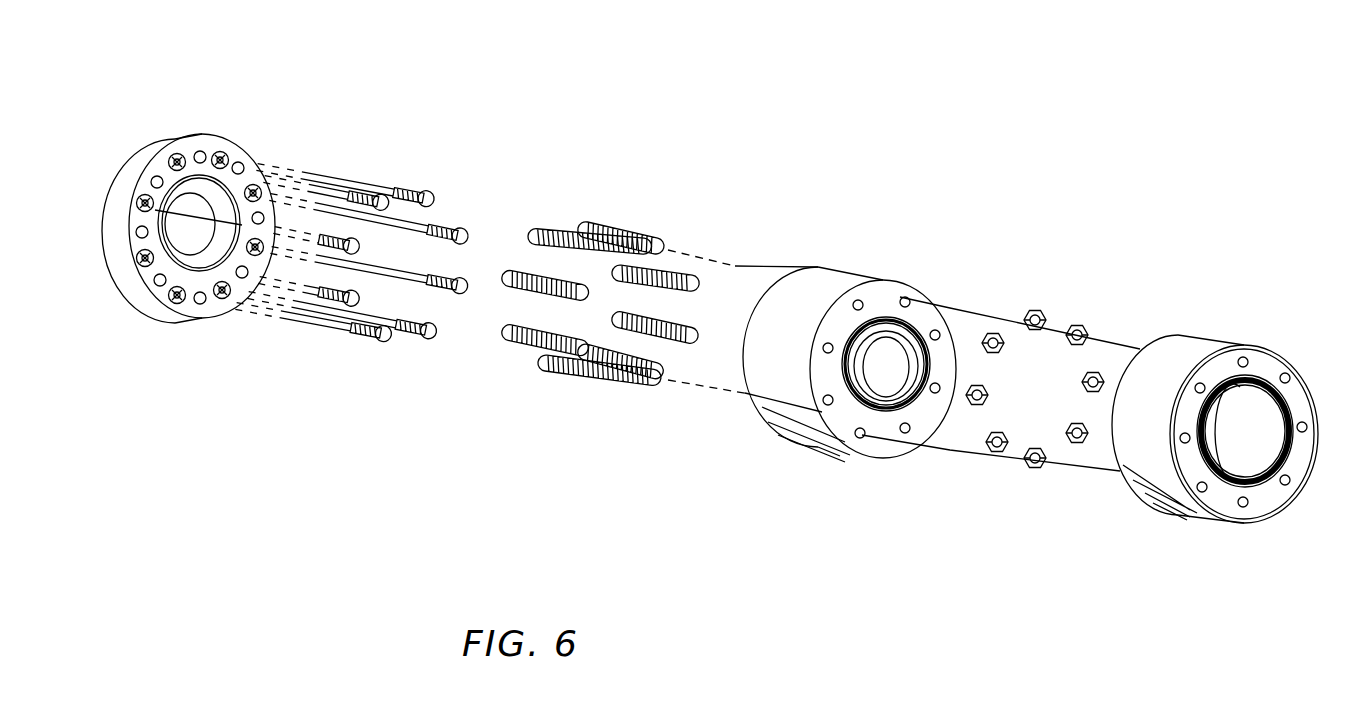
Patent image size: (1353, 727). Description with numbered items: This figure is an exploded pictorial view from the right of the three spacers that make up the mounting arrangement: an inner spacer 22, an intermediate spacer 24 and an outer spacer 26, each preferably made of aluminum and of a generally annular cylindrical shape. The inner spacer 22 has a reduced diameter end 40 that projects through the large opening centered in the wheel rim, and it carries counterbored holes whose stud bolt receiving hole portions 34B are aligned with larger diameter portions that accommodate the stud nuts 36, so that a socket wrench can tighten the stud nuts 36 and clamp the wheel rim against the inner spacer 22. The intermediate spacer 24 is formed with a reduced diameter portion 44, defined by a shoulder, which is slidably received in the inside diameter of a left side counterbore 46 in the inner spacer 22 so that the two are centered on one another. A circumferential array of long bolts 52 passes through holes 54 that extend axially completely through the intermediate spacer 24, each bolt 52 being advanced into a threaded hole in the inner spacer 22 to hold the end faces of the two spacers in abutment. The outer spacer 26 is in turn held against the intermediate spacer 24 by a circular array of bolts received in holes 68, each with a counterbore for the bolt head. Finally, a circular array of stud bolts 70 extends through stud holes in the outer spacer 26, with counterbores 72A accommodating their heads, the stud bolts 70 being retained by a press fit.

The inner spacer 22 is at (1180, 336).
The intermediate spacer 24 is at (831, 268).
The outer spacer 26 is at (178, 128).
The stud bolt receiving hole portions 34B is at (1247, 358).
The stud nuts 36 is at (1073, 328).
The reduced diameter end 40 is at (1226, 408).
The reduced diameter portion 44 is at (895, 318).
The left side counterbore 46 is at (1222, 450).
The long bolts 52 is at (607, 230).
The holes 54 is at (828, 405).
The holes 68 is at (201, 150).
The stud bolts 70 is at (383, 196).
The counterbores 72A is at (177, 303).